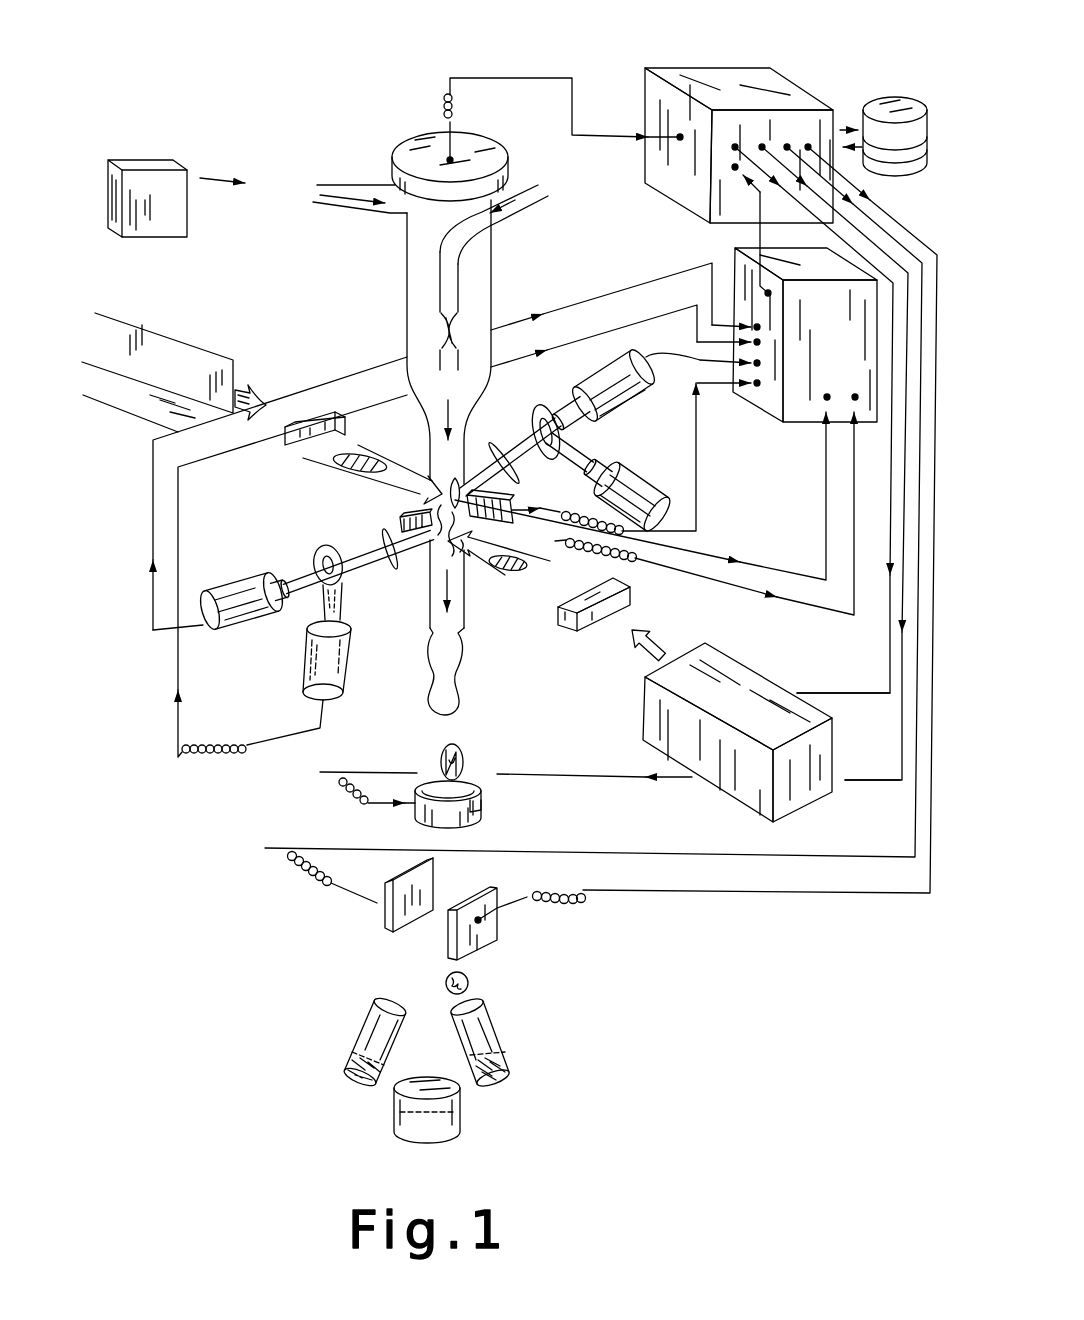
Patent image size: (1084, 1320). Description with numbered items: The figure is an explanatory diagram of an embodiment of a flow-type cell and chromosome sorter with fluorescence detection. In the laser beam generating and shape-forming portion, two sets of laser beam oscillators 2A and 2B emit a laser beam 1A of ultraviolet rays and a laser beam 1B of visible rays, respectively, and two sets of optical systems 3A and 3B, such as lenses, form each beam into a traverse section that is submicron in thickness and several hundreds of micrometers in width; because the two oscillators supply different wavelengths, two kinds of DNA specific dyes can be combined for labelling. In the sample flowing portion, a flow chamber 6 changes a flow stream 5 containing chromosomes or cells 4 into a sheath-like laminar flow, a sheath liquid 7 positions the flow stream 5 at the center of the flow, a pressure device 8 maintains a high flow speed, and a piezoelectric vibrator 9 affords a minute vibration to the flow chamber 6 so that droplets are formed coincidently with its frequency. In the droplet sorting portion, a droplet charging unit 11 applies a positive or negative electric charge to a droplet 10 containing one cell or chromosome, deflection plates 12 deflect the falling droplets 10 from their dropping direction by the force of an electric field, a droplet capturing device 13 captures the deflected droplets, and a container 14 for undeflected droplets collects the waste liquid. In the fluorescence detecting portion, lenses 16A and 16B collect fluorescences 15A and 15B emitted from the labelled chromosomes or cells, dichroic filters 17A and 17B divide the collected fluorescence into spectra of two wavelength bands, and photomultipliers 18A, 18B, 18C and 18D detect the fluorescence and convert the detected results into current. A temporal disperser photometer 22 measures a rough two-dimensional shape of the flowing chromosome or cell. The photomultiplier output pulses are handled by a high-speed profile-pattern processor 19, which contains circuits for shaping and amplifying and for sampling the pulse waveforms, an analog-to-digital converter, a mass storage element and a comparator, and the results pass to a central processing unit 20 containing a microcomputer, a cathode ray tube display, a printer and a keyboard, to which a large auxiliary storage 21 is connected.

The laser beam 1A is at (400, 475).
The laser beam 1B is at (486, 572).
The laser beam oscillator 2A is at (170, 348).
The laser beam oscillator 2B is at (733, 778).
The optical system 3A is at (303, 427).
The optical system 3B is at (633, 597).
The chromosomes or cells 4 is at (476, 320).
The flow stream 5 is at (553, 195).
The flow chamber 6 is at (407, 272).
The sheath liquid 7 is at (345, 185).
The pressure device 8 is at (163, 178).
The piezoelectric vibrator 9 is at (413, 132).
The droplet 10 is at (443, 765).
The droplet charging unit 11 is at (460, 680).
The deflection plates 12 is at (385, 918).
The droplet capturing device 13 is at (350, 1047).
The container for undeflected droplets 14 is at (393, 1125).
The fluorescence 15A is at (370, 563).
The fluorescence 15B is at (525, 455).
The lens 16A is at (380, 543).
The lens 16B is at (495, 447).
The dichroic filter 17A is at (316, 556).
The dichroic filter 17B is at (545, 410).
The photomultiplier 18A is at (228, 590).
The photomultiplier 18B is at (305, 678).
The photomultiplier 18C is at (641, 390).
The photomultiplier 18D is at (630, 470).
The high-speed profile-pattern processor 19 is at (773, 405).
The central processing unit 20 is at (712, 66).
The large auxiliary storage 21 is at (872, 97).
The temporal disperser photometer 22 is at (403, 517).